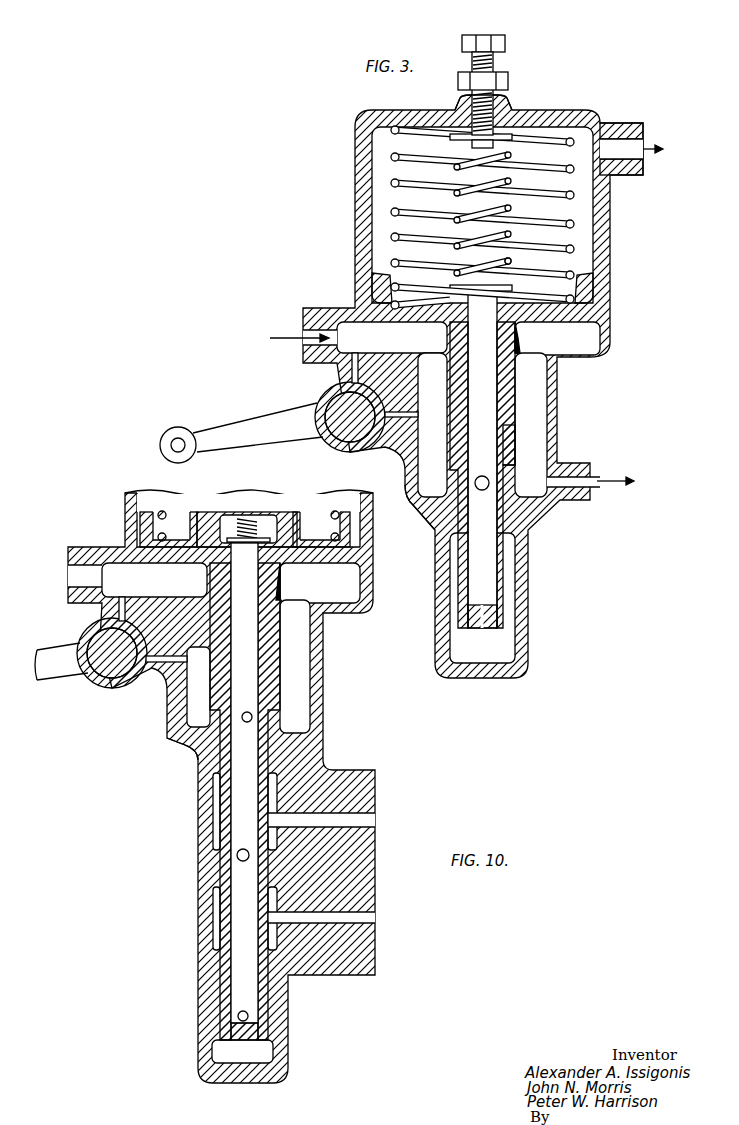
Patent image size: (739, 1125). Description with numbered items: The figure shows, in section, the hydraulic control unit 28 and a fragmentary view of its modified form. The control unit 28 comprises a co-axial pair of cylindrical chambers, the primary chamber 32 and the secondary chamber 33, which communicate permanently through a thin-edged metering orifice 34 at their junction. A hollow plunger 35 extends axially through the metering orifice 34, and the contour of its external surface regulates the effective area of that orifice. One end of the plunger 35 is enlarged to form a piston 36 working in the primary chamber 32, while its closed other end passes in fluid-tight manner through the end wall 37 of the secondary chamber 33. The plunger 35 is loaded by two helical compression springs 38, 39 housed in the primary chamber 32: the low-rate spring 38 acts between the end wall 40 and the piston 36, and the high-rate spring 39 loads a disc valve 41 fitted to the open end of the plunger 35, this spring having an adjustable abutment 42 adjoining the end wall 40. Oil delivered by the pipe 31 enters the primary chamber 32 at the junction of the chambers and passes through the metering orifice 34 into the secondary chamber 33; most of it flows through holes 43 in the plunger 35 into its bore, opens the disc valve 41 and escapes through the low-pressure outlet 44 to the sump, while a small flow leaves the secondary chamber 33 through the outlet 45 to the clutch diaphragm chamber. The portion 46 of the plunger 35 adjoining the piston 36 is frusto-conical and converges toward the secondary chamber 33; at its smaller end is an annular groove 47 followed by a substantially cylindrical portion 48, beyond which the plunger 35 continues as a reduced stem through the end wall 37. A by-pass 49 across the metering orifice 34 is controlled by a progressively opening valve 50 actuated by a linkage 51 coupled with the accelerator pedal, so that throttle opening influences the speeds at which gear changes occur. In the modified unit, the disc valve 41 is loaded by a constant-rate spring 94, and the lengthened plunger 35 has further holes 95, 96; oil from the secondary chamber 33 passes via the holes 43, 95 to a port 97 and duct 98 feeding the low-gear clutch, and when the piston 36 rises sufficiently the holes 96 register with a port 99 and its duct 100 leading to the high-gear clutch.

In FIG. 3, the control unit 28 is at (362, 190).
In FIG. 10, the control unit 28 is at (130, 497).
In FIG. 3, the pipe 31 is at (320, 316).
In FIG. 10, the pipe 31 is at (88, 574).
In FIG. 3, the primary chamber 32 is at (575, 223).
In FIG. 10, the primary chamber 32 is at (306, 500).
In FIG. 3, the secondary chamber 33 is at (537, 385).
In FIG. 10, the secondary chamber 33 is at (300, 668).
In FIG. 3, the metering orifice 34 is at (522, 350).
In FIG. 10, the metering orifice 34 is at (285, 598).
In FIG. 3, the hollow plunger 35 is at (458, 577).
In FIG. 10, the hollow plunger 35 is at (224, 880).
In FIG. 3, the piston 36 is at (380, 300).
In FIG. 10, the piston 36 is at (176, 560).
In FIG. 3, the end wall 37 is at (444, 527).
In FIG. 3, the helical compression spring 38 is at (396, 262).
In FIG. 10, the helical compression spring 38 is at (178, 512).
In FIG. 3, the helical compression spring 39 is at (512, 264).
In FIG. 3, the end wall 40 is at (422, 113).
In FIG. 3, the disc valve 41 is at (484, 290).
In FIG. 10, the disc valve 41 is at (255, 520).
In FIG. 3, the adjustable abutment 42 is at (497, 133).
In FIG. 3, the holes 43 is at (437, 496).
In FIG. 10, the holes 43 is at (225, 720).
In FIG. 3, the low-pressure outlet 44 is at (613, 150).
In FIG. 3, the outlet 45 is at (591, 498).
In FIG. 3, the frusto-conical portion 46 is at (456, 368).
In FIG. 3, the annular groove 47 is at (500, 408).
In FIG. 3, the cylindrical portion 48 is at (510, 448).
In FIG. 3, the by-pass 49 is at (361, 376).
In FIG. 10, the by-pass 49 is at (153, 629).
In FIG. 3, the progressively opening valve 50 is at (340, 405).
In FIG. 10, the progressively opening valve 50 is at (104, 645).
In FIG. 3, the linkage 51 is at (224, 432).
In FIG. 10, the linkage 51 is at (57, 672).
In FIG. 10, the spring 94 is at (244, 516).
In FIG. 10, the holes 95 is at (228, 853).
In FIG. 10, the holes 96 is at (222, 1018).
In FIG. 10, the port 97 is at (216, 805).
In FIG. 10, the duct 98 is at (368, 820).
In FIG. 10, the port 99 is at (216, 928).
In FIG. 10, the duct 100 is at (368, 918).